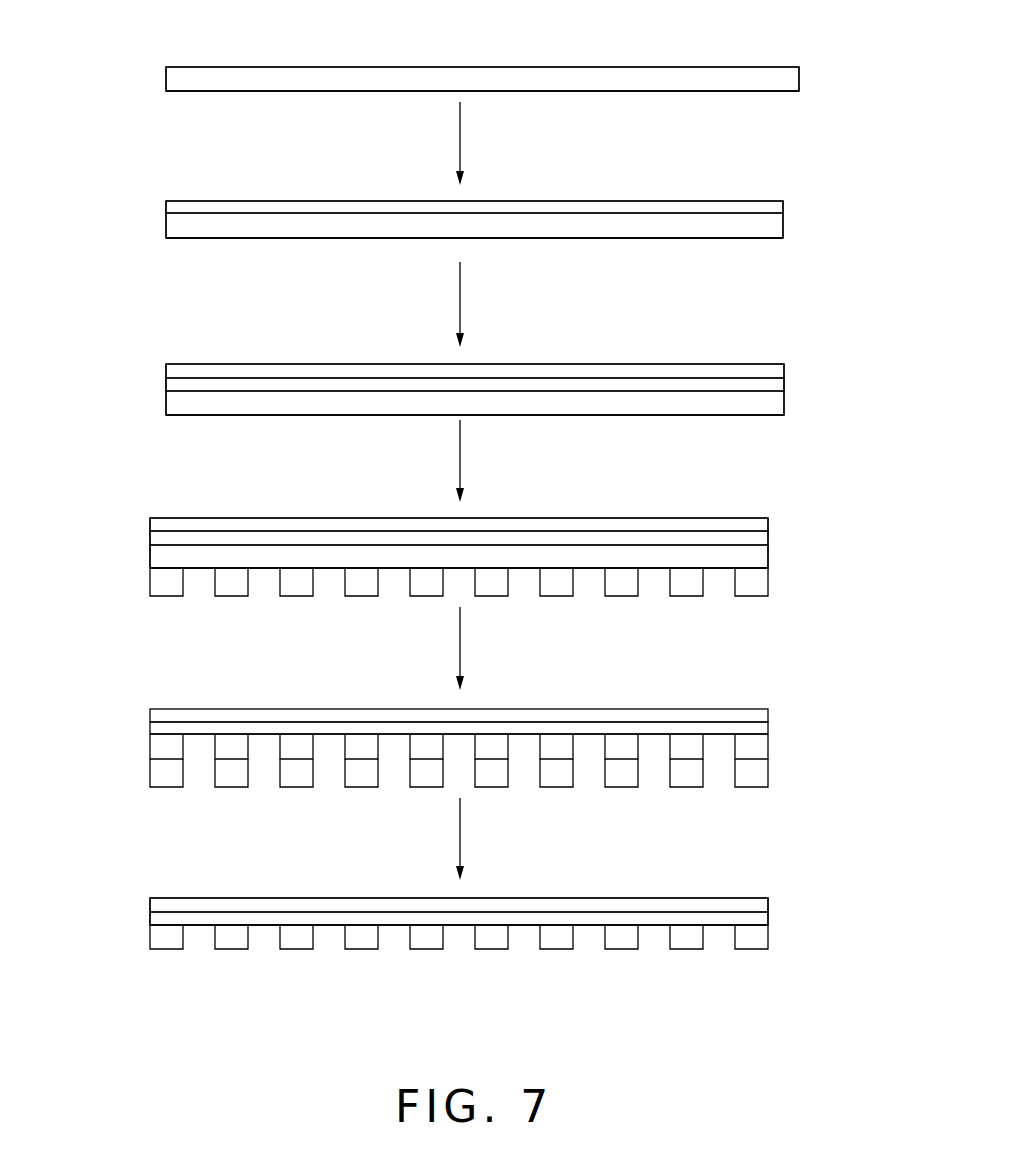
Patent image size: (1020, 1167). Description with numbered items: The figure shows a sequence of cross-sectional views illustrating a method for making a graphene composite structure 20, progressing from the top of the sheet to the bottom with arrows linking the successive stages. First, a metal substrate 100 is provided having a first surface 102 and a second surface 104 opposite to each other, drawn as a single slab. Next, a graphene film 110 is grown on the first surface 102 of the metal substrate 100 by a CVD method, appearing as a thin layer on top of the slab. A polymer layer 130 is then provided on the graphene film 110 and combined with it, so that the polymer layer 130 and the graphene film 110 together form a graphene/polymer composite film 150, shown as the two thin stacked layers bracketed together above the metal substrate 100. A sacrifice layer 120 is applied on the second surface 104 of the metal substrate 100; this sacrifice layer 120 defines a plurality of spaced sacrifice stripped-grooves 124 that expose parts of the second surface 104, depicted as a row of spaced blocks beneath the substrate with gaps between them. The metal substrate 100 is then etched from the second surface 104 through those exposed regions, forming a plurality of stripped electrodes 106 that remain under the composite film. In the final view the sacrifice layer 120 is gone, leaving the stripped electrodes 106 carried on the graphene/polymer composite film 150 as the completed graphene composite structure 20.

The graphene composite structure 20 is at (746, 879).
The metal substrate 100 is at (760, 50).
The first surface 102 is at (207, 67).
The second surface 104 is at (212, 91).
The stripped electrodes 106 is at (757, 747).
The graphene film 110 is at (768, 207).
The sacrifice layer 120 is at (757, 585).
The sacrifice stripped-grooves 124 is at (717, 589).
The polymer layer 130 is at (710, 370).
The graphene/polymer composite film 150 is at (801, 305).